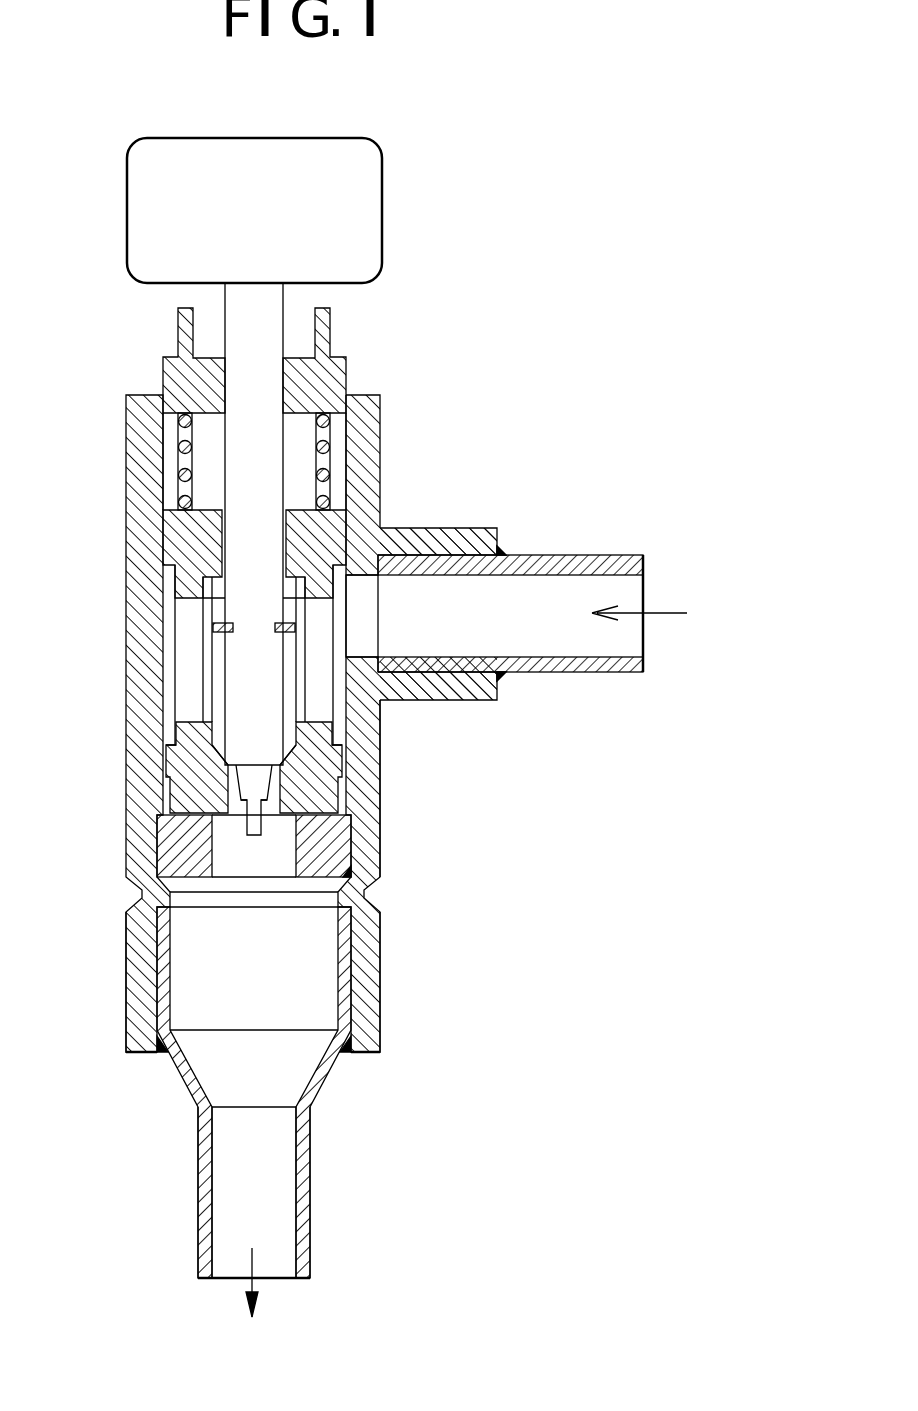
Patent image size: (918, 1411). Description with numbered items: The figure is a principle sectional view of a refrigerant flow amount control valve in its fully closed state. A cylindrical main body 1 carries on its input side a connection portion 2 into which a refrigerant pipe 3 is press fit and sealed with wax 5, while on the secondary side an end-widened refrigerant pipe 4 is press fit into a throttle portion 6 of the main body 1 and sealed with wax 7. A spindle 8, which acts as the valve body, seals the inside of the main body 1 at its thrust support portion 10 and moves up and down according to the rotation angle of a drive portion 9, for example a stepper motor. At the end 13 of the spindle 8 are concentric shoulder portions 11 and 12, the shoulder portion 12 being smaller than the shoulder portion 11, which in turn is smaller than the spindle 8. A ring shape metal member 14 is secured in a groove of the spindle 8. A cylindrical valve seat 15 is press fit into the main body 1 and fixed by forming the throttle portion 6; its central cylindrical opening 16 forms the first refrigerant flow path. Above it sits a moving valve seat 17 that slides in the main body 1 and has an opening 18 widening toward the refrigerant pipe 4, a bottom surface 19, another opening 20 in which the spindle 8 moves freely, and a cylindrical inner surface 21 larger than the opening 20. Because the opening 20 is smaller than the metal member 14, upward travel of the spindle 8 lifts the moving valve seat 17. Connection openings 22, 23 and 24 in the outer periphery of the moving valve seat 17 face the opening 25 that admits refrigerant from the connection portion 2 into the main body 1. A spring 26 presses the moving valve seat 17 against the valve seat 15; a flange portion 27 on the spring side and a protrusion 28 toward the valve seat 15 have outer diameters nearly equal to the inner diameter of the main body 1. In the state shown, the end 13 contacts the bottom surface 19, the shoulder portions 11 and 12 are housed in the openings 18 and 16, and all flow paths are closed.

The cylindrical main body 1 is at (126, 448).
The connection portion 2 is at (488, 530).
The refrigerant pipe 3 is at (607, 557).
The end-widened refrigerant pipe 4 is at (312, 1180).
The wax 5 is at (503, 553).
The throttle portion 6 is at (132, 903).
The wax 7 is at (168, 1047).
The spindle 8 is at (268, 307).
The drive portion 9 is at (367, 225).
The thrust support portion 10 is at (327, 363).
The shoulder portion 11 is at (249, 831).
The shoulder portion 12 is at (252, 845).
The end of spindle 13 is at (250, 792).
The ring shape metal member 14 is at (210, 647).
The cylindrical valve seat 15 is at (352, 870).
The cylindrical opening 16 is at (206, 868).
The moving valve seat 17 is at (350, 790).
The opening 18 is at (267, 816).
The bottom surface 19 is at (295, 750).
The opening 20 is at (228, 545).
The cylindrical inner surface 21 is at (220, 600).
The connection opening 22 is at (215, 683).
The connection opening 23 is at (185, 708).
The connection opening 24 is at (380, 735).
The opening 25 is at (370, 603).
The spring 26 is at (180, 442).
The flange portion 27 is at (177, 522).
The protrusion 28 is at (175, 758).